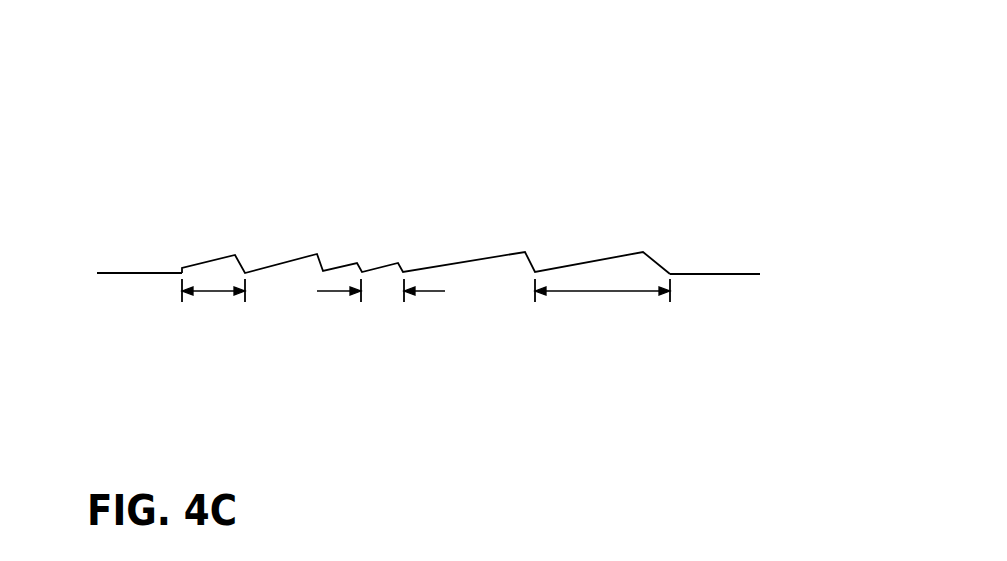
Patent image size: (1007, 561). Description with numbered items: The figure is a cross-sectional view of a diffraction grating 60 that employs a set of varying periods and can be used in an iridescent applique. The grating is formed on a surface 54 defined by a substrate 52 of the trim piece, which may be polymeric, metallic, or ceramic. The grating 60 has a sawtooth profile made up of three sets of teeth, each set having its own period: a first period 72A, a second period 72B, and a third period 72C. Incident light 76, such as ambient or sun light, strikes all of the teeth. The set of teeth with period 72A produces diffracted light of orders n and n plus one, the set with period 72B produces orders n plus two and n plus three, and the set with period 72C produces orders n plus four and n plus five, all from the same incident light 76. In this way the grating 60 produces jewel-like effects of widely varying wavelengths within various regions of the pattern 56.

The substrate 52 is at (481, 363).
The surface 54 is at (122, 272).
The pattern 56 is at (307, 122).
The diffraction grating 60 is at (657, 123).
The incident light 76 is at (194, 263).
The period 72A is at (210, 292).
The period 72B is at (337, 292).
The period 72C is at (585, 292).